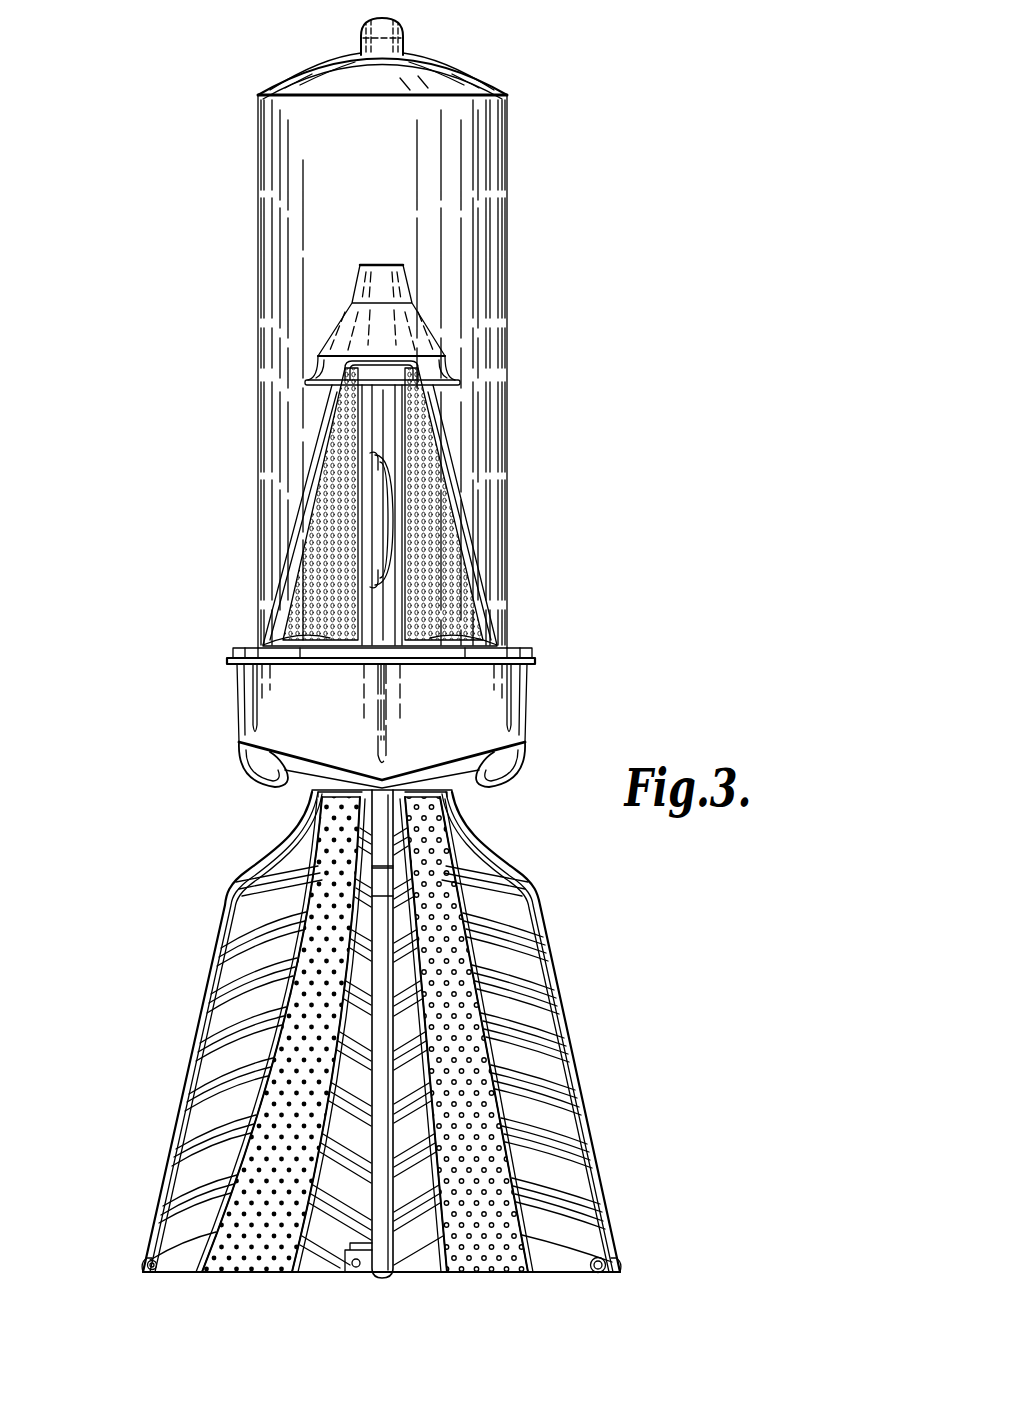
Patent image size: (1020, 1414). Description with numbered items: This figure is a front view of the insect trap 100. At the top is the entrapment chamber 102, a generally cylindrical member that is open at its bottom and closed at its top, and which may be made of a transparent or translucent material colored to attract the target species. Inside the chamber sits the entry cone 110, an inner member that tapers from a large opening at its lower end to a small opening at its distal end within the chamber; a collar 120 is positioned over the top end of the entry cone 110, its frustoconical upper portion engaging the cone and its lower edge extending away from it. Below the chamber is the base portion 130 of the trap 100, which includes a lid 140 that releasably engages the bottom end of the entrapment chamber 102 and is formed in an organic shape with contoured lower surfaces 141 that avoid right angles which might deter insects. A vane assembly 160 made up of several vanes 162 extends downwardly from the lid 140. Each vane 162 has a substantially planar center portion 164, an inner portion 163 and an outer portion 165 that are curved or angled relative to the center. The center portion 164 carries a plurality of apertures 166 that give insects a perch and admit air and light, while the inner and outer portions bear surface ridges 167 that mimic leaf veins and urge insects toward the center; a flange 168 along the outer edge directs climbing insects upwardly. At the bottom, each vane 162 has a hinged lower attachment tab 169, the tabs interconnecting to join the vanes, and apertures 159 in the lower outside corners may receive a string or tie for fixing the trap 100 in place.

The trap 100 is at (558, 97).
The entrapment chamber 102 is at (510, 215).
The collar 120 is at (425, 316).
The entry cone 110 is at (467, 519).
The base portion 130 is at (213, 722).
The lid 140 is at (528, 709).
The contoured lower surfaces 141 is at (495, 770).
The vane assembly 160 is at (548, 920).
The vanes 162 is at (557, 998).
The flange 168 is at (567, 1043).
The surface ridges 167 is at (552, 1097).
The apertures 166 is at (485, 1265).
The outer portion 165 is at (173, 1275).
The center portion 164 is at (245, 1275).
The inner portion 163 is at (298, 1275).
The lower attachment tab 169 is at (356, 1275).
The apertures 159 is at (598, 1275).